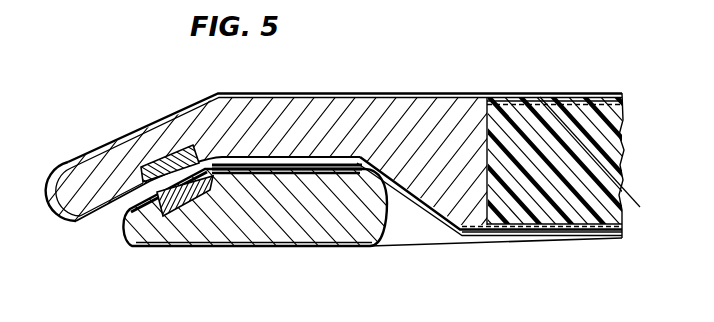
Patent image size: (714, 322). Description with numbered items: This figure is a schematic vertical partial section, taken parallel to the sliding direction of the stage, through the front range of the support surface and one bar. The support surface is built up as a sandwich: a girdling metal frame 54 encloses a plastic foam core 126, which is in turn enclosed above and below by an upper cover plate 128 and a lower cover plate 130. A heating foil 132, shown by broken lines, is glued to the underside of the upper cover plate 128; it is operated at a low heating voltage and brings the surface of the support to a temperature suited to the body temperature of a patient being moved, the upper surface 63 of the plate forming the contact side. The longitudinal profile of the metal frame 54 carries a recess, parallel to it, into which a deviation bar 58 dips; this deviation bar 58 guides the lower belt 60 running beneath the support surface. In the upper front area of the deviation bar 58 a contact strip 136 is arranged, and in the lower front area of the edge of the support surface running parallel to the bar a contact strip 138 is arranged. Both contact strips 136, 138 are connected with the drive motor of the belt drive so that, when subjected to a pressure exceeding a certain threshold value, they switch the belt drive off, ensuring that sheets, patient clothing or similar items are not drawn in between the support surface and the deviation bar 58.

The metal frame 54 is at (365, 103).
The deviation bar 58 is at (300, 232).
The lower belt 60 is at (473, 249).
The upper surface 63 is at (432, 93).
The plastic foam core 126 is at (608, 140).
The upper cover plate 128 is at (507, 103).
The lower cover plate 130 is at (563, 228).
The heating foil 132 is at (578, 112).
The contact strip 136 is at (190, 205).
The contact strip 138 is at (173, 150).